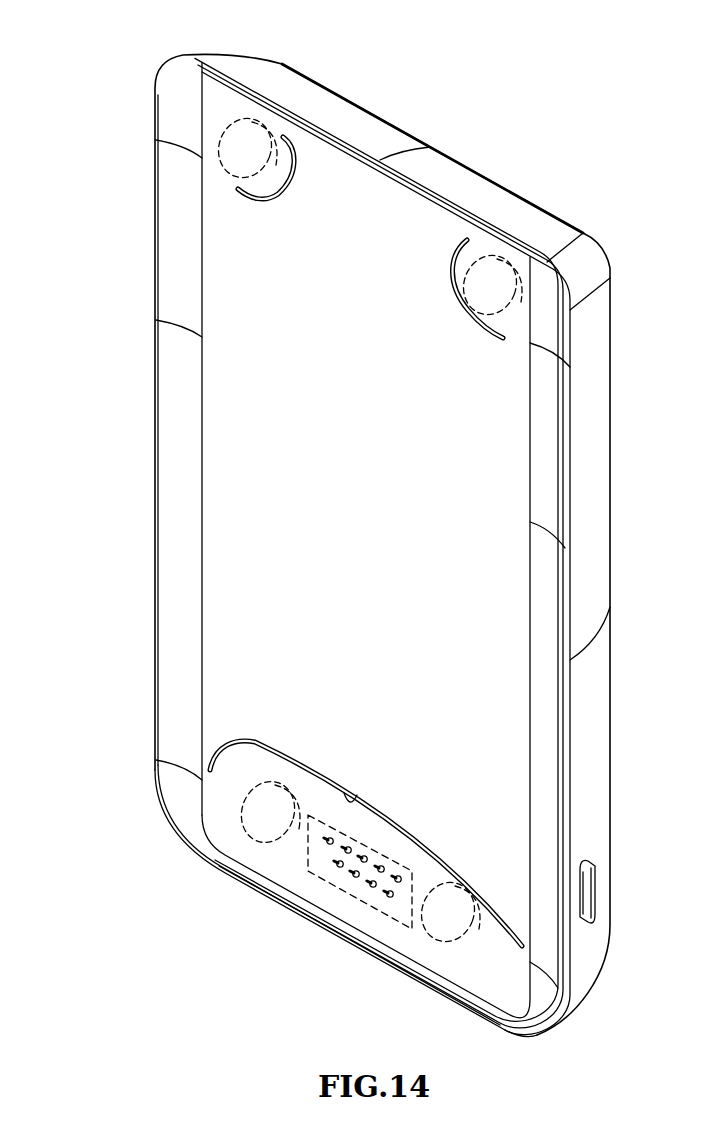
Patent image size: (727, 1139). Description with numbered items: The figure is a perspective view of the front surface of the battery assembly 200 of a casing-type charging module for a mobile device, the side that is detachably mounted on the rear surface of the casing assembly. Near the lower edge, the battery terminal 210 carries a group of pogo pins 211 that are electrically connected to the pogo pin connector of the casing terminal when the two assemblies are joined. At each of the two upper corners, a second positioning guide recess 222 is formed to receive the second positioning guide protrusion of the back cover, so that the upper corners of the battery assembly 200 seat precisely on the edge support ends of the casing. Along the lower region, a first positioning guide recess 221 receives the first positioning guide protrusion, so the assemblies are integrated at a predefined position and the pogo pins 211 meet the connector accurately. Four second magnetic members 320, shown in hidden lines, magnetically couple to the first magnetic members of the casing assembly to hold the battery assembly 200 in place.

The battery assembly 200 is at (382, 97).
The battery terminal 210 is at (352, 897).
The pogo pin 211 is at (352, 875).
The first positioning guide recess 221 is at (351, 795).
The second positioning guide recess 222 is at (272, 202).
The second magnetic member 320 is at (222, 155).